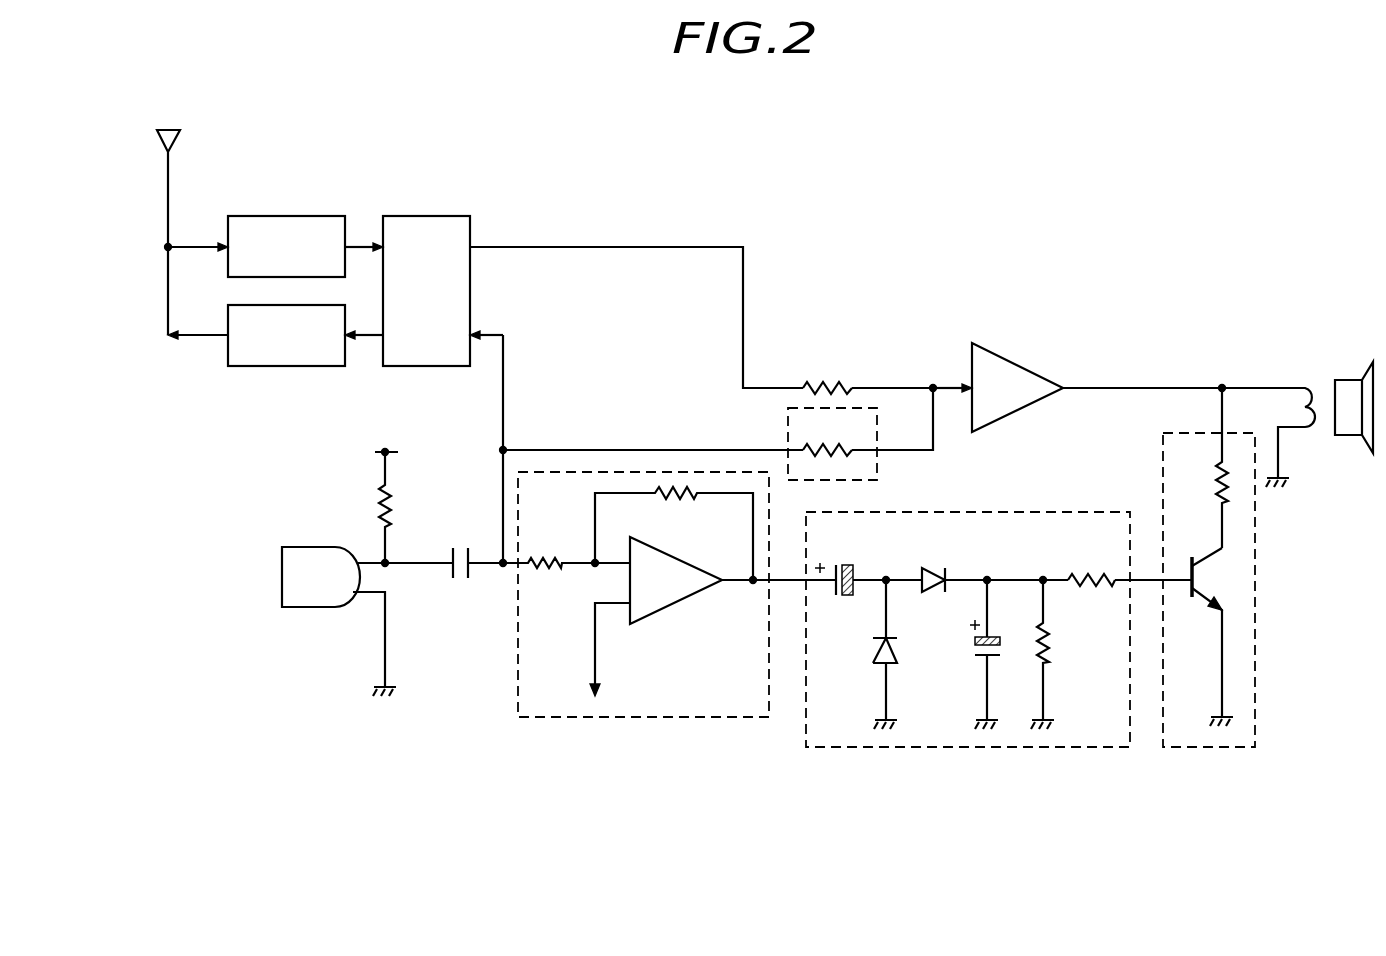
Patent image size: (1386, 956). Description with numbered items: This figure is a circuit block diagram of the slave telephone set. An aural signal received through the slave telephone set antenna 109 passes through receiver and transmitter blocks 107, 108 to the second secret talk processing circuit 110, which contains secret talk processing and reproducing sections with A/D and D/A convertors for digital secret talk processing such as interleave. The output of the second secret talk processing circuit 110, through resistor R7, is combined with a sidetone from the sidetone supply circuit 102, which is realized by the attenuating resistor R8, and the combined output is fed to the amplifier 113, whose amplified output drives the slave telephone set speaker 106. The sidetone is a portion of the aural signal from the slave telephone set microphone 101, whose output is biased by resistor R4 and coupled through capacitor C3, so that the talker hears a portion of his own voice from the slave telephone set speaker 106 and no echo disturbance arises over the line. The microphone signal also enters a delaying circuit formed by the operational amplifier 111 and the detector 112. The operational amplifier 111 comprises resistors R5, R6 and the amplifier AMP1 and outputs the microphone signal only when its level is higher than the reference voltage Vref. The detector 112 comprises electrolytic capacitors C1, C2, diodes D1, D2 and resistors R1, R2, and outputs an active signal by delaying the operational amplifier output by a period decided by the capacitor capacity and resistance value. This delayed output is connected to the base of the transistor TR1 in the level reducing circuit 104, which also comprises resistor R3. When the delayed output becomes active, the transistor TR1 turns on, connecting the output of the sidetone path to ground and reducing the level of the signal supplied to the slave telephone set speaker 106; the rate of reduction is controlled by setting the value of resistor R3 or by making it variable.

The slave telephone set microphone 101 is at (287, 540).
The sidetone supply circuit 102 is at (733, 447).
The level reducing circuit 104 is at (1209, 599).
The slave telephone set speaker 106 is at (1360, 373).
The receiver RX 107 is at (258, 215).
The transmitter TX 108 is at (272, 367).
The slave telephone set antenna 109 is at (183, 128).
The second secret talk processing circuit 110 is at (423, 221).
The operational amplifier 111 is at (669, 630).
The detector 112 is at (999, 664).
The amplifier 113 is at (1000, 347).
The resistor R1 is at (1050, 640).
The resistor R2 is at (1085, 575).
The resistor R3 is at (1217, 490).
The resistor R4 is at (378, 507).
The resistor R5 is at (545, 558).
The resistor R6 is at (672, 500).
The resistor R7 is at (828, 383).
The resistor R8 is at (860, 443).
The electrolytic capacitor C1 is at (848, 568).
The electrolytic capacitor C2 is at (985, 660).
The capacitor C3 is at (448, 546).
The diode D1 is at (873, 656).
The diode D2 is at (933, 567).
The transistor TR1 is at (1202, 600).